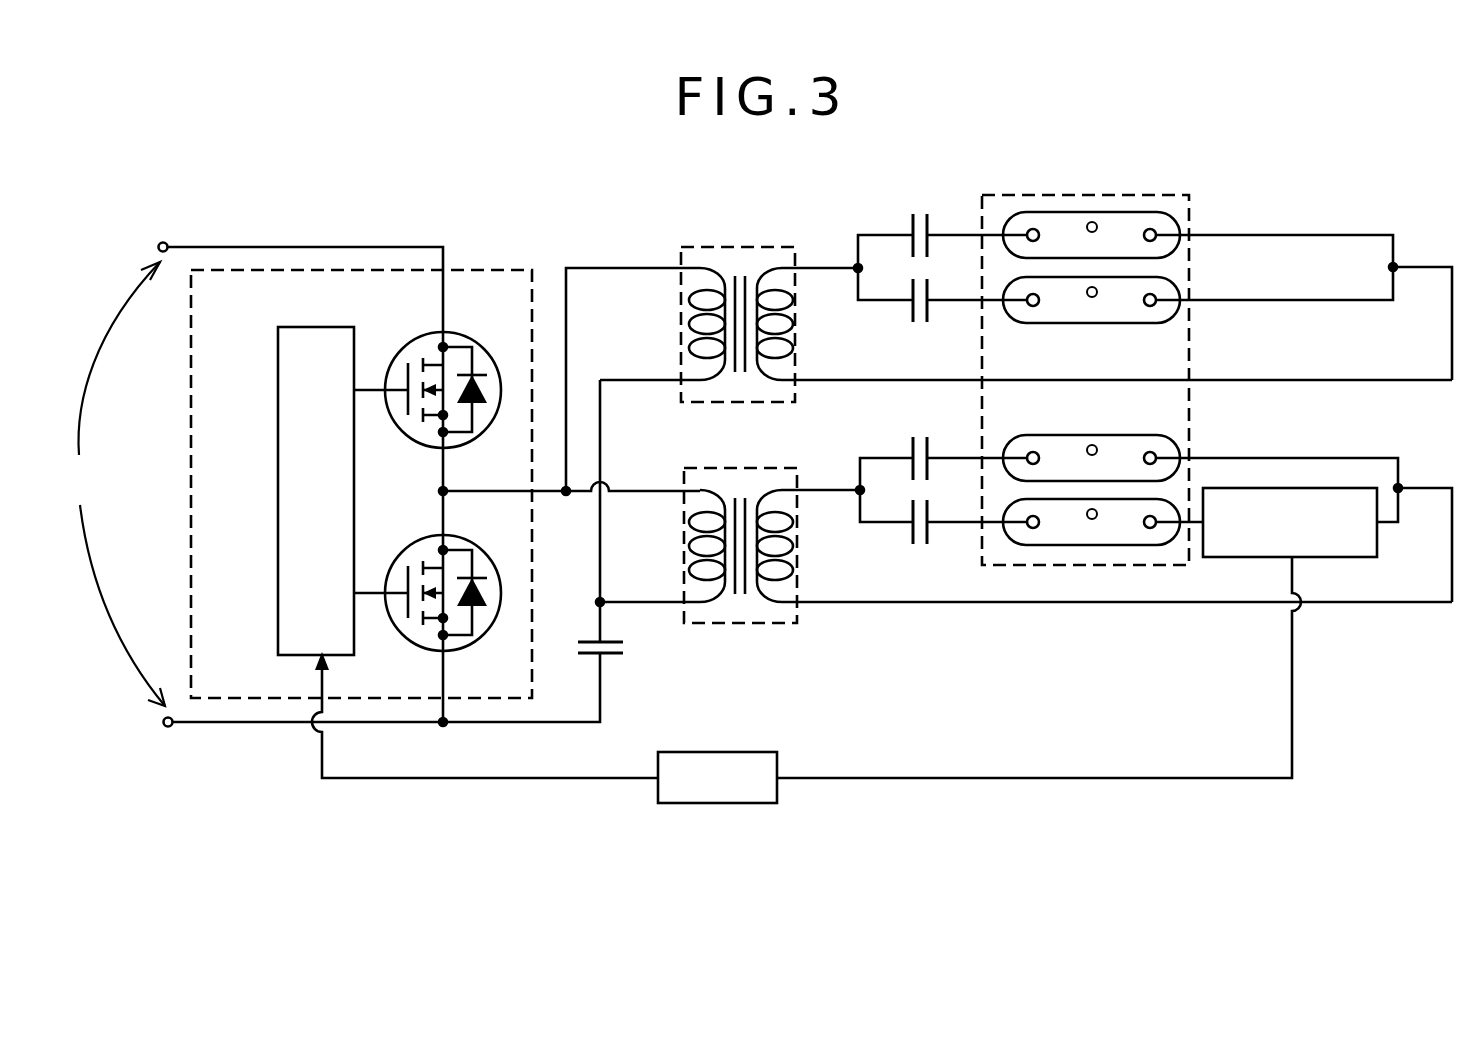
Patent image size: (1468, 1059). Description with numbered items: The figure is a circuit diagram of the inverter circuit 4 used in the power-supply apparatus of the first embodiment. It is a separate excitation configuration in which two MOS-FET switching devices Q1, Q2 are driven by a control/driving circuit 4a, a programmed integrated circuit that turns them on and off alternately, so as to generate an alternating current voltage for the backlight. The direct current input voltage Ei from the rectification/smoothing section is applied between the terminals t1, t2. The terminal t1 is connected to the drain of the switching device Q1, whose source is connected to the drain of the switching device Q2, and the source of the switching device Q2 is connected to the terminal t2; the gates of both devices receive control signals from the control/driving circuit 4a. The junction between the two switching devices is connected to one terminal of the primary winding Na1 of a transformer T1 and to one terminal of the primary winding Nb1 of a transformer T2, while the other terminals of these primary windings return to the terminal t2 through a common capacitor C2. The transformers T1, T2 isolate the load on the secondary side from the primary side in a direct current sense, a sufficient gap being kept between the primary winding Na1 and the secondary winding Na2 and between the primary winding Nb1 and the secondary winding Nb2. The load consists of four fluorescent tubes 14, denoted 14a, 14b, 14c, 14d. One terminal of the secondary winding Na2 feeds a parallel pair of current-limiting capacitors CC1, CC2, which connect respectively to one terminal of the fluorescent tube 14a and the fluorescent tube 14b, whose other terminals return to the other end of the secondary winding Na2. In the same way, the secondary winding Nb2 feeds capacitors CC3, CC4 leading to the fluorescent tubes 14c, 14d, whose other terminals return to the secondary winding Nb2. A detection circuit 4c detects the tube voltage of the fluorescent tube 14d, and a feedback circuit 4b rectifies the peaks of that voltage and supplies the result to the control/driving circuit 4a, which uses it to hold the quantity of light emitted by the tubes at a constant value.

The inverter circuit 4 is at (1018, 864).
The control/driving circuit 4a is at (278, 446).
The feedback circuit 4b is at (720, 803).
The detection circuit 4c is at (1377, 535).
The fluorescent tubes 14 is at (1085, 370).
The fluorescent tube 14a is at (1117, 213).
The fluorescent tube 14b is at (1117, 323).
The fluorescent tube 14c is at (1117, 435).
The fluorescent tube 14d is at (1117, 545).
The switching device Q1 is at (447, 404).
The switching device Q2 is at (447, 607).
The transformer T1 is at (1026, 311).
The transformer T2 is at (1026, 532).
The primary winding Na1 is at (686, 324).
The secondary winding Na2 is at (797, 324).
The primary winding Nb1 is at (688, 546).
The secondary winding Nb2 is at (799, 546).
The capacitor CC1 is at (920, 221).
The capacitor CC2 is at (920, 317).
The capacitor CC3 is at (920, 443).
The capacitor CC4 is at (923, 539).
The capacitor C2 is at (612, 668).
The terminal t1 is at (163, 244).
The terminal t2 is at (168, 727).
The direct current input voltage Ei is at (122, 484).